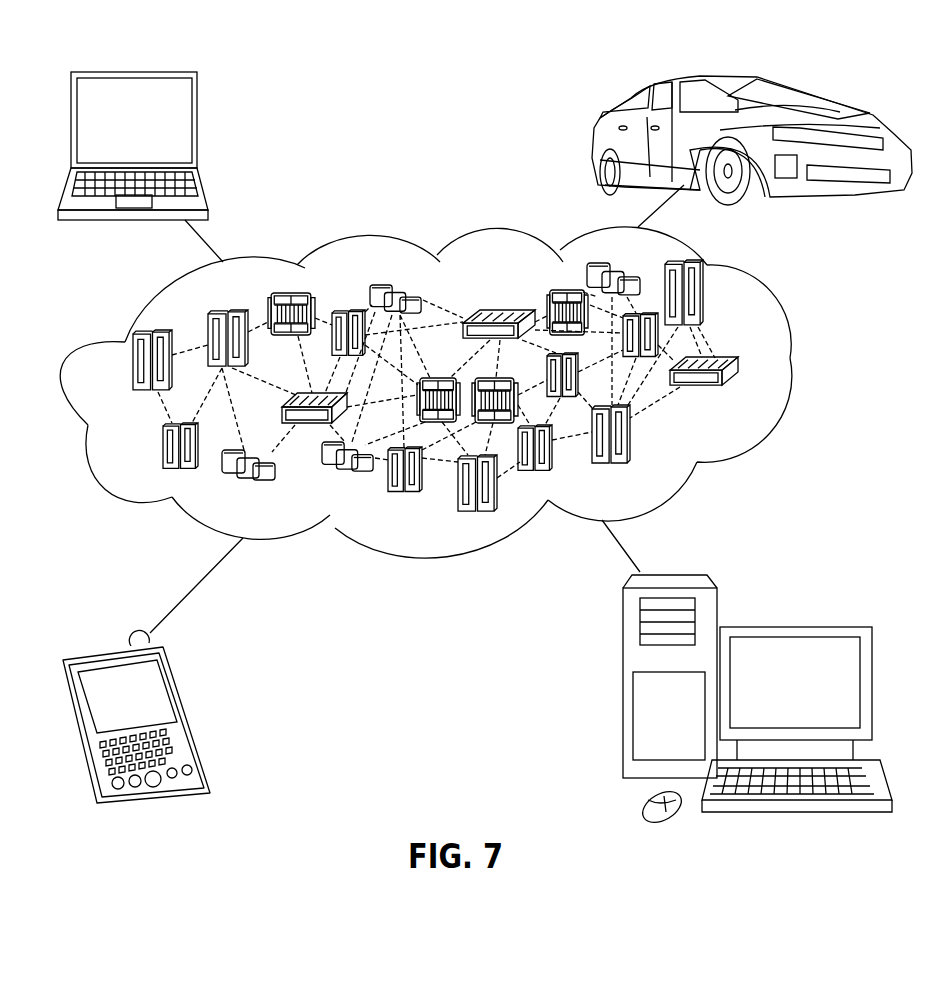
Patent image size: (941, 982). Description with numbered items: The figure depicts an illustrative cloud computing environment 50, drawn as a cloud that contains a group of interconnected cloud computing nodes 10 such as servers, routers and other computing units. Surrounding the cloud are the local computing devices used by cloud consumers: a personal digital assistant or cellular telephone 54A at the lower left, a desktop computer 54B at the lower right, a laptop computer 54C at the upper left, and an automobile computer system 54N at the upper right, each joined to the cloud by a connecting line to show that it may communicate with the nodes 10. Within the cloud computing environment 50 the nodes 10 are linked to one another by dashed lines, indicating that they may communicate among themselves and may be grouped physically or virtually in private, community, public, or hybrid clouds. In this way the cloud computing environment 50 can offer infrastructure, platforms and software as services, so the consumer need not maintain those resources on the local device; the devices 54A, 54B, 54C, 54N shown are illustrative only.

The cloud computing node 10 is at (748, 396).
The cloud computing environment 50 is at (452, 392).
The personal digital assistant (PDA) or cellular telephone 54A is at (187, 707).
The desktop computer 54B is at (792, 627).
The laptop computer 54C is at (197, 126).
The automobile computer system 54N is at (592, 140).